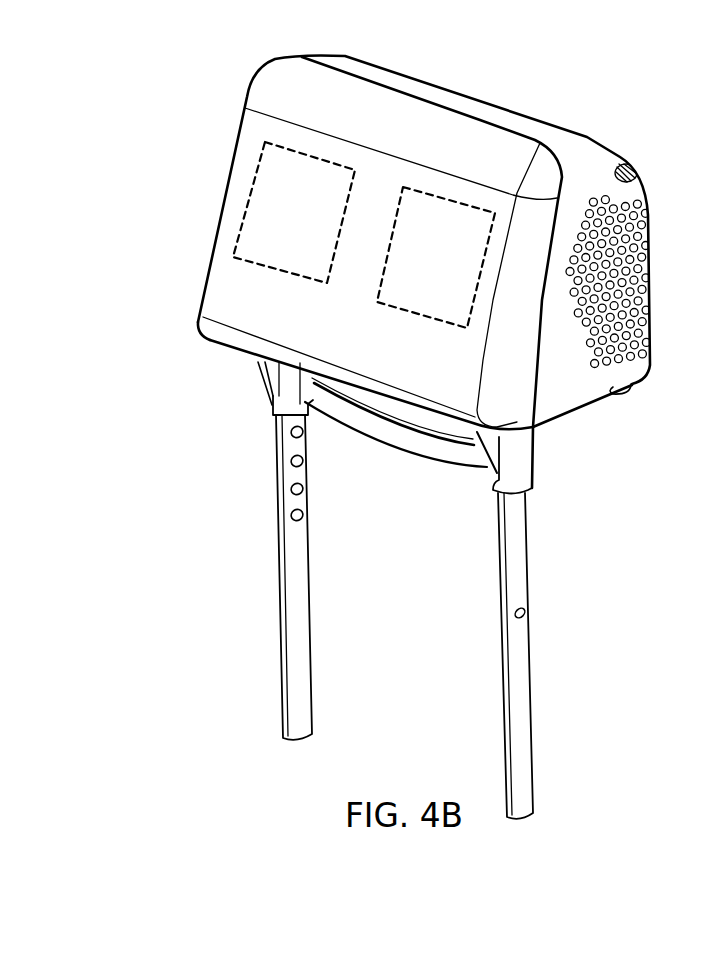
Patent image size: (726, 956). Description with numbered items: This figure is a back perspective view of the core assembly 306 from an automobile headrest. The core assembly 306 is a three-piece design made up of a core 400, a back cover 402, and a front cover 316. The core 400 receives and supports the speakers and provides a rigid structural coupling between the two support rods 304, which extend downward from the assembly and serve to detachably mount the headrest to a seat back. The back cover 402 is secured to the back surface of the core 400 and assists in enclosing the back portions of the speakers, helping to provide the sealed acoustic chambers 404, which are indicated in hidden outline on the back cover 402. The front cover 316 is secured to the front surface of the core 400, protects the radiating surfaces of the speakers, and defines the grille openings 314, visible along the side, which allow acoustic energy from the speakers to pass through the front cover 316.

The core assembly 306 is at (102, 93).
The core 400 is at (438, 95).
The back cover 402 is at (266, 73).
The sealed acoustic chambers 404 is at (392, 223).
The grille openings 314 is at (627, 251).
The front cover 316 is at (560, 390).
The support rods 304 is at (312, 592).